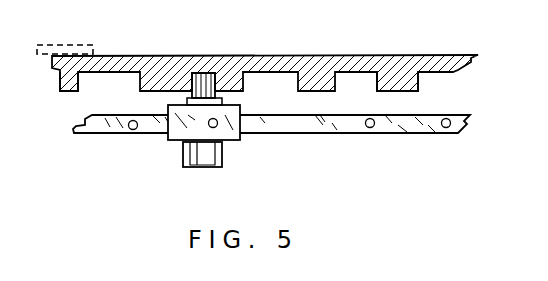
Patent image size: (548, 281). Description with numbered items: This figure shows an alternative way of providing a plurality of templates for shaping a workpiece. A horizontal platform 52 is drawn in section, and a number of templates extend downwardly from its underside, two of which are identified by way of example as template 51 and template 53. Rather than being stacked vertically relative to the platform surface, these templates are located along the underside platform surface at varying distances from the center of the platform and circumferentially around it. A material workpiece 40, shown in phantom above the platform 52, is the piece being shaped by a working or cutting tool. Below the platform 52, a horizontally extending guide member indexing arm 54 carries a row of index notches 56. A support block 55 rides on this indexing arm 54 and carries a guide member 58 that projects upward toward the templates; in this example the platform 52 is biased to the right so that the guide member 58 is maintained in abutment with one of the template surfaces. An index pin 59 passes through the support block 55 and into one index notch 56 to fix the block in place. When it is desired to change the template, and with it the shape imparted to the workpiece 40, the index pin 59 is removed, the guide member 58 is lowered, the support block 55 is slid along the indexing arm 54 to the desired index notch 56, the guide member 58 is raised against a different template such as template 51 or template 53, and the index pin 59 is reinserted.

The material workpiece 40 is at (88, 45).
The template 51 is at (79, 78).
The platform 52 is at (305, 55).
The template 53 is at (420, 75).
The guide member indexing arm 54 is at (363, 133).
The support block 55 is at (178, 143).
The index notch 56 is at (375, 123).
The guide member 58 is at (186, 96).
The index pin 59 is at (217, 125).